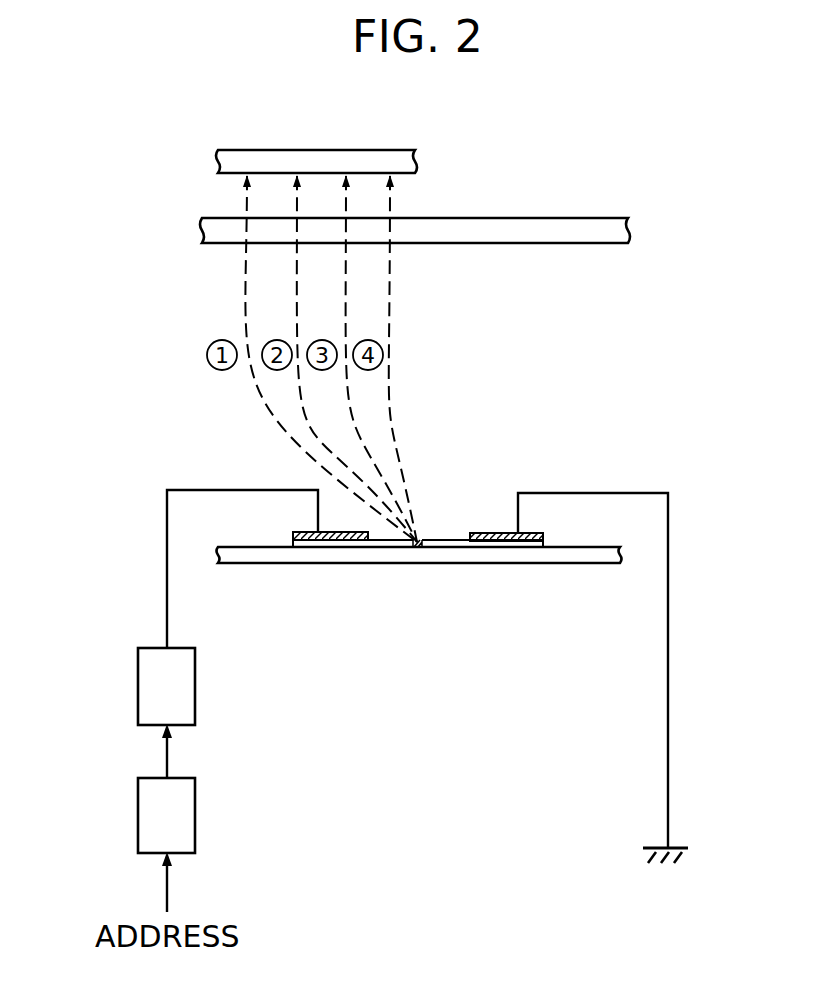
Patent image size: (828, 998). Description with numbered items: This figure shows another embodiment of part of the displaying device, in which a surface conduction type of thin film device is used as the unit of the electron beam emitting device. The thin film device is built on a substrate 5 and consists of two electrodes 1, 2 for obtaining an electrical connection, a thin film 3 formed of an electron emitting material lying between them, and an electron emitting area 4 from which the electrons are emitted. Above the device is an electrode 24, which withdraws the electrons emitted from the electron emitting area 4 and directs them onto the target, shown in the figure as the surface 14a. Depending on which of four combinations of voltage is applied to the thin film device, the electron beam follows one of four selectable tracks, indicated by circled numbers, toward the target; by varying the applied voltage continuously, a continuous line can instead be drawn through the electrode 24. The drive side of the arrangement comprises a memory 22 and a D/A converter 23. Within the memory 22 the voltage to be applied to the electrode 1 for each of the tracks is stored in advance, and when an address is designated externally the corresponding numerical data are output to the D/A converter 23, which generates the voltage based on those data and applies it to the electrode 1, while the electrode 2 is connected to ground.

The light-receiving surface / target 14a is at (248, 150).
The electrode 24 is at (545, 245).
The electrode 1 is at (300, 532).
The electrode 2 is at (540, 533).
The thin film 3 is at (457, 540).
The electron emitting area 4 is at (421, 540).
The substrate 5 is at (258, 563).
The memory 22 is at (138, 816).
The D/A converter 23 is at (138, 678).